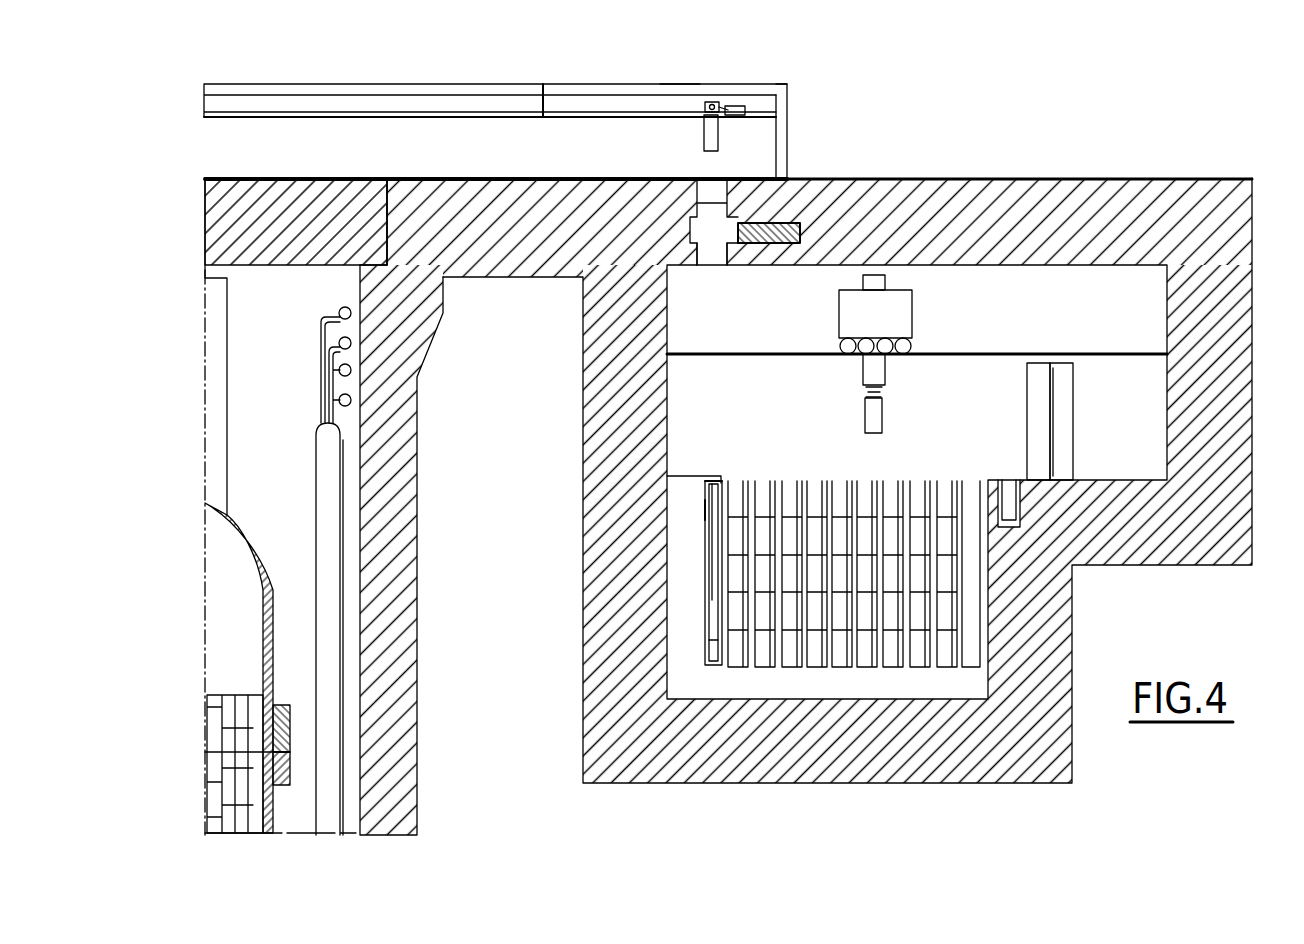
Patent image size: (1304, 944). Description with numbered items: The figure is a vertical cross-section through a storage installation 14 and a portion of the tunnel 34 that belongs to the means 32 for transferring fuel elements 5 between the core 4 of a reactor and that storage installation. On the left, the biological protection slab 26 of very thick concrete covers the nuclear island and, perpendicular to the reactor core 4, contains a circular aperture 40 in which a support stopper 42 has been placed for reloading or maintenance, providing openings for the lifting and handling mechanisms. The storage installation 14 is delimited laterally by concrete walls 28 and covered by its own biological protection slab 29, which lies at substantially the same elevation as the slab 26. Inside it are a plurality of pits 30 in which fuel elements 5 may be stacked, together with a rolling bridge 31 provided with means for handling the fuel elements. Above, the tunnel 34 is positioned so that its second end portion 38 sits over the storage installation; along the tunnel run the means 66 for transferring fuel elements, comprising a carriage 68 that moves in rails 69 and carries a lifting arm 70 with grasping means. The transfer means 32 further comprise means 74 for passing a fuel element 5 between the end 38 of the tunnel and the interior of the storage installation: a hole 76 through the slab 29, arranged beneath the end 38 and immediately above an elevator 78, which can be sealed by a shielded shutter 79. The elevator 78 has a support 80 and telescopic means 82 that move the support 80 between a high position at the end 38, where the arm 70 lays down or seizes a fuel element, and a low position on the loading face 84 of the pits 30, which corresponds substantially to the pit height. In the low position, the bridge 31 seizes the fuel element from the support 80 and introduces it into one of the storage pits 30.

The core 4 is at (185, 690).
The fuel element 5 is at (705, 137).
The storage installation 14 is at (1135, 453).
The biological protection slab 26 is at (413, 216).
The concrete wall 28 is at (1207, 390).
The biological protection slab 29 is at (1013, 222).
The pit 30 is at (972, 617).
The rolling bridge 31 is at (890, 318).
The means for transferring fuel elements 32 is at (799, 118).
The tunnel 34 is at (432, 85).
The second end portion 38 is at (758, 90).
The circular aperture 40 is at (372, 218).
The support stopper 42 is at (258, 215).
The means for transferring the fuel elements along the tunnel 66 is at (680, 73).
The carriage 68 is at (737, 106).
The rails 69 is at (544, 85).
The lifting arm 70 is at (712, 102).
The means for transferring the fuel element between the tunnel end and the storage i 74 is at (741, 200).
The hole 76 is at (703, 258).
The elevator 78 is at (702, 508).
The shielded shutter 79 is at (775, 245).
The support 80 is at (710, 479).
The telescopic means 82 is at (710, 556).
The loading face 84 is at (680, 477).